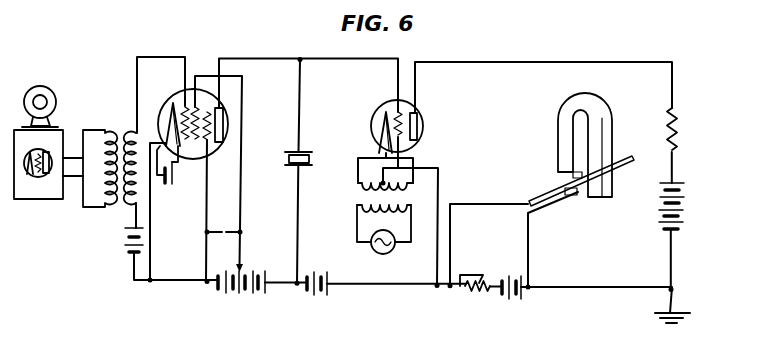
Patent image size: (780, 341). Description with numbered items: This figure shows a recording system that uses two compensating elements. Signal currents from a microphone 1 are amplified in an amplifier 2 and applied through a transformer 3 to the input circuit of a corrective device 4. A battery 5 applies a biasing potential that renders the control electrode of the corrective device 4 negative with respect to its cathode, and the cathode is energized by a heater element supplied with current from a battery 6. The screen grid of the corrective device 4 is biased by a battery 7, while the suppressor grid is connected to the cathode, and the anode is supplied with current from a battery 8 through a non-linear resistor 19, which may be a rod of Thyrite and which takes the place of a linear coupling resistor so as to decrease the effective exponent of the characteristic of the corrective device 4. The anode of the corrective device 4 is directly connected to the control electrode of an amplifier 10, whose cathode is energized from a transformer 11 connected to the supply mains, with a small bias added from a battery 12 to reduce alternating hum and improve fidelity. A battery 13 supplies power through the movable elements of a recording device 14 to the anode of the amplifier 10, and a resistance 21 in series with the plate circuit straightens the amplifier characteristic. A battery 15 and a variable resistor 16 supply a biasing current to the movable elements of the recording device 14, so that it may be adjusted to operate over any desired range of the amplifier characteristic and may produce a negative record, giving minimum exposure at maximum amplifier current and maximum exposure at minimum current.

The microphone 1 is at (41, 90).
The amplifier 2 is at (45, 202).
The transformer 3 is at (123, 209).
The corrective device 4 is at (192, 102).
The battery 5 is at (125, 249).
The battery 6 is at (166, 185).
The battery 7 is at (230, 296).
The battery 8 is at (255, 295).
The amplifier 10 is at (384, 106).
The transformer 11 is at (353, 202).
The battery 12 is at (308, 296).
The battery 13 is at (686, 207).
The recording device 14 is at (586, 149).
The battery 15 is at (514, 298).
The variable resistor 16 is at (483, 292).
The non-linear resistor 19 is at (313, 156).
The resistance 21 is at (680, 134).